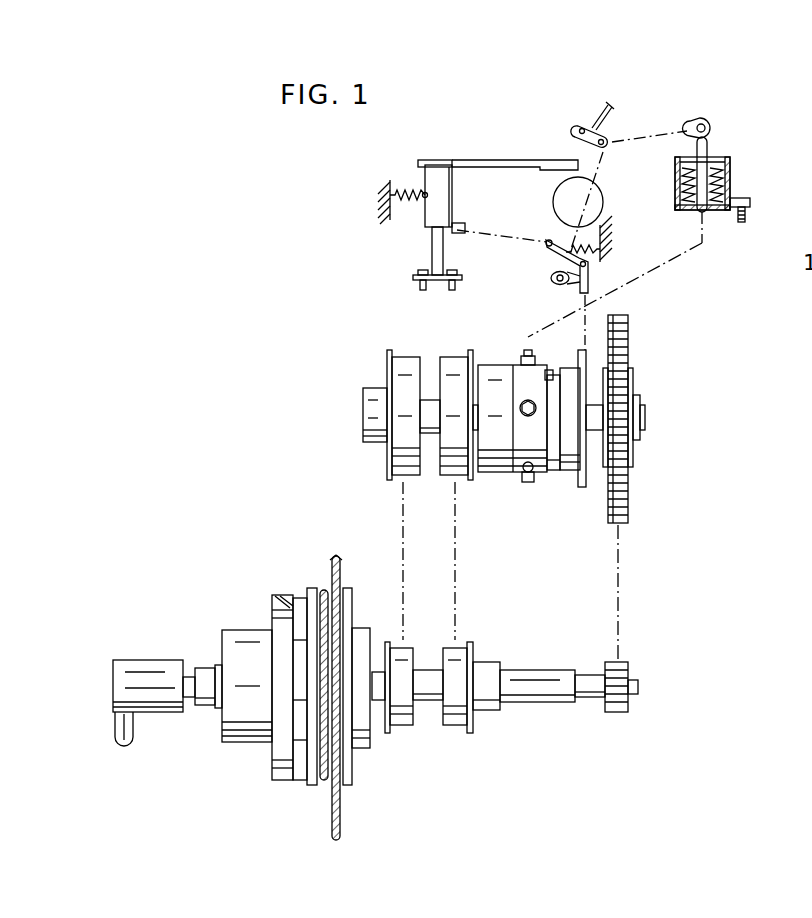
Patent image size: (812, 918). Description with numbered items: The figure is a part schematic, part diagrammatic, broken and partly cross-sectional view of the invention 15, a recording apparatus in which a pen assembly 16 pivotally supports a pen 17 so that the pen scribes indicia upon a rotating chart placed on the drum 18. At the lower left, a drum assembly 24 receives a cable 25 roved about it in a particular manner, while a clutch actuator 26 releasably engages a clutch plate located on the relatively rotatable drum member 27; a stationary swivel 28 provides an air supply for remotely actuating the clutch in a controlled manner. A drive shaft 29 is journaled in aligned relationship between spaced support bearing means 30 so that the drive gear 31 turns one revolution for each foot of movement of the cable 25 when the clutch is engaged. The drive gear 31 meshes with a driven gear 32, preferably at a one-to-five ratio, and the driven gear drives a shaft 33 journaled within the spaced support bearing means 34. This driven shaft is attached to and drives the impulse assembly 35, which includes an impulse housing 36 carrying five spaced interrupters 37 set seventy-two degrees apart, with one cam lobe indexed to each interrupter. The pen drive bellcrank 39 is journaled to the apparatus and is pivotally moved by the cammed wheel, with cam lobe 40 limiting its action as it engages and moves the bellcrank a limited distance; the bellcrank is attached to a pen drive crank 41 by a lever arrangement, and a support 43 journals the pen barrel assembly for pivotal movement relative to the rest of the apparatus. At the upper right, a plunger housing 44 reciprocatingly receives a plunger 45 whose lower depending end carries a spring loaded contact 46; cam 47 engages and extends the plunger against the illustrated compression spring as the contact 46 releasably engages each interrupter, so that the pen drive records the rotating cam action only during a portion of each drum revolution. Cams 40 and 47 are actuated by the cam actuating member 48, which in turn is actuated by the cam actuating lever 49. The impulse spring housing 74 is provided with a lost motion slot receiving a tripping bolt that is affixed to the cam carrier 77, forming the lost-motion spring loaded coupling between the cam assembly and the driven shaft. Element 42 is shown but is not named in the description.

The invention 15 is at (370, 324).
The pen assembly 16 is at (438, 160).
The pen 17 is at (547, 160).
The drum 18 is at (555, 198).
The drum assembly 24 is at (220, 628).
The cable 25 is at (330, 562).
The clutch actuator 26 is at (285, 725).
The drum member 27 is at (283, 593).
The stationary swivel 28 is at (135, 655).
The drive shaft 29 is at (548, 703).
The support bearing means 30 is at (450, 727).
The drive gear 31 is at (618, 713).
The driven gear 32 is at (630, 500).
The shaft 33 is at (645, 420).
The support bearing means 34 is at (446, 358).
The impulse assembly 35 is at (528, 484).
The impulse housing 36 is at (536, 480).
The interrupters 37 is at (527, 352).
The pen drive bellcrank 39 is at (546, 240).
The cam lobe 40 is at (551, 278).
The pen drive crank 41 is at (463, 233).
The slide block 42 is at (452, 193).
The support 43 is at (432, 255).
The plunger housing 44 is at (735, 167).
The plunger 45 is at (710, 150).
The spring loaded contact 46 is at (707, 212).
The cam 47 is at (710, 120).
The cam actuating member 48 is at (612, 132).
The cam actuating lever 49 is at (598, 118).
The impulse spring housing 74 is at (503, 473).
The cam carrier 77 is at (550, 370).